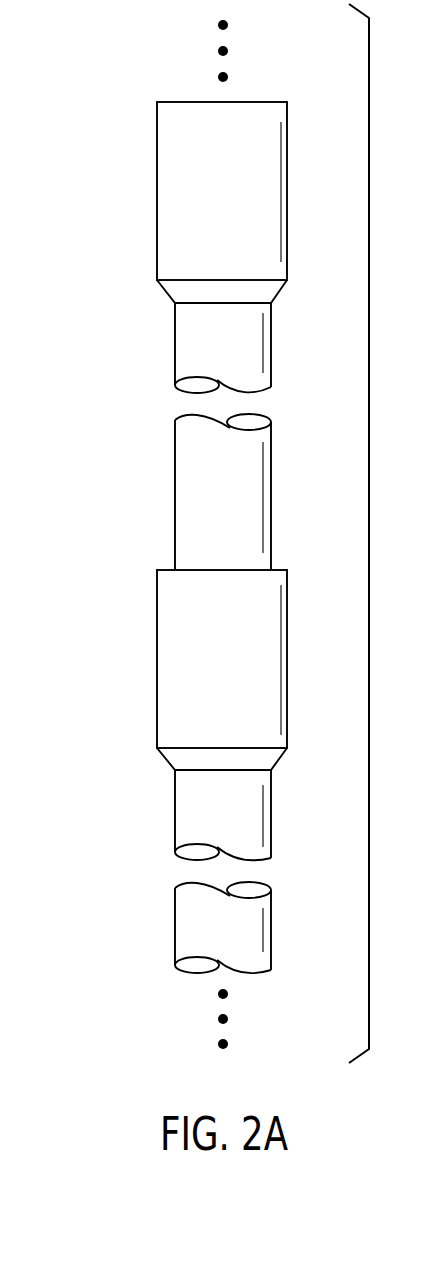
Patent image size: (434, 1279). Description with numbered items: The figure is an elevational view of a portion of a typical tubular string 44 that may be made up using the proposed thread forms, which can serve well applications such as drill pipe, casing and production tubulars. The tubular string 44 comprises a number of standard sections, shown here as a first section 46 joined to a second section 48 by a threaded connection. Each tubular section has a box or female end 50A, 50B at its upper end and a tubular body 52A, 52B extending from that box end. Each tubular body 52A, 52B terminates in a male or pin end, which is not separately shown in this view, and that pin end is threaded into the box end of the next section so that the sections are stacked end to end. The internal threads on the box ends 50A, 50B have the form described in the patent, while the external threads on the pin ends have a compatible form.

The tubular string 44 is at (119, 575).
The first section 46 is at (175, 348).
The second section 48 is at (157, 692).
The box or female end 50A is at (176, 183).
The box or female end 50B is at (176, 642).
The tubular body 52A is at (248, 347).
The tubular body 52B is at (248, 813).